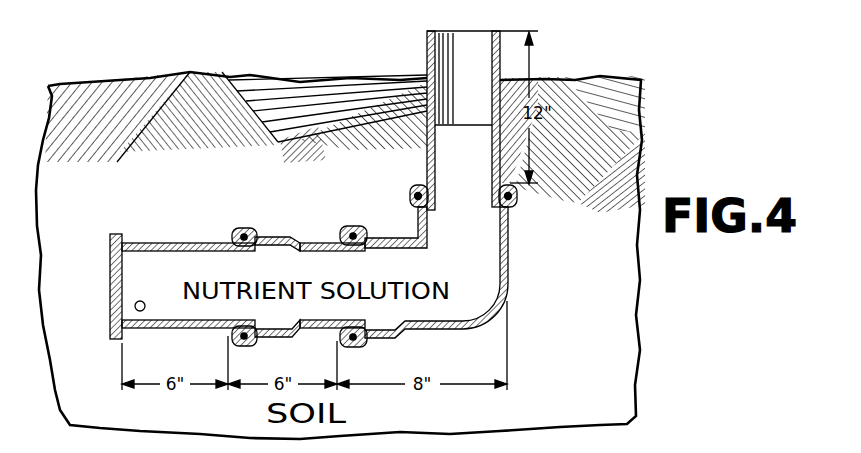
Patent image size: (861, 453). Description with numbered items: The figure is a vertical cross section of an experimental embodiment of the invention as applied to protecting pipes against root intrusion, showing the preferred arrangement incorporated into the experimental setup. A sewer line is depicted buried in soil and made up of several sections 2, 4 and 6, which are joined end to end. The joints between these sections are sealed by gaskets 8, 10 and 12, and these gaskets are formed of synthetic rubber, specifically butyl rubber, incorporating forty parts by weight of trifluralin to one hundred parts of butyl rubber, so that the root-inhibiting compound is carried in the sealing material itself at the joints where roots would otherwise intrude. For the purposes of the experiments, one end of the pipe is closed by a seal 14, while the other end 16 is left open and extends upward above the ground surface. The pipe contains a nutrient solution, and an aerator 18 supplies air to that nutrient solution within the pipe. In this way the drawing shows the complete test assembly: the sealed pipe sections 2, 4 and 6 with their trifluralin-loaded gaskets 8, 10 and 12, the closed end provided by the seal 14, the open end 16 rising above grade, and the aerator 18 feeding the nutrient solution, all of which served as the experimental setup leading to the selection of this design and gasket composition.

The sewer line section 2 is at (503, 305).
The sewer line section 4 is at (289, 332).
The sewer line section 6 is at (173, 329).
The gasket 8 is at (518, 201).
The gasket 10 is at (354, 227).
The gasket 12 is at (247, 227).
The seal 14 is at (110, 268).
The open end 16 is at (427, 50).
The aerator 18 is at (134, 306).